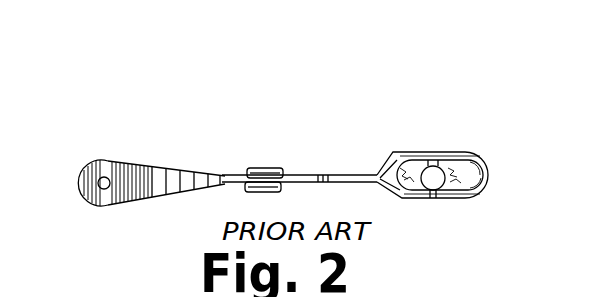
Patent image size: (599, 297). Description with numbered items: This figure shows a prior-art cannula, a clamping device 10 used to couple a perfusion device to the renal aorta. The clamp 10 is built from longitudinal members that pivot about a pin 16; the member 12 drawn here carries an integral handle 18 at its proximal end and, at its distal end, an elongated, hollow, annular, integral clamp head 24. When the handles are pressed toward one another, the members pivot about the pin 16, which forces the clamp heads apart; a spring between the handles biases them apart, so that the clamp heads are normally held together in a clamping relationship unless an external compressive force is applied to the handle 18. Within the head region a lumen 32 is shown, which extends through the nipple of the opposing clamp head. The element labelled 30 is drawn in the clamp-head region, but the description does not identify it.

The clamping device 10 is at (211, 122).
The longitudinal member 12 is at (317, 174).
The pin 16 is at (262, 168).
The handle 18 is at (101, 161).
The clamp head 24 is at (482, 166).
The inner loop band 30 is at (407, 167).
The lumen 32 is at (438, 165).